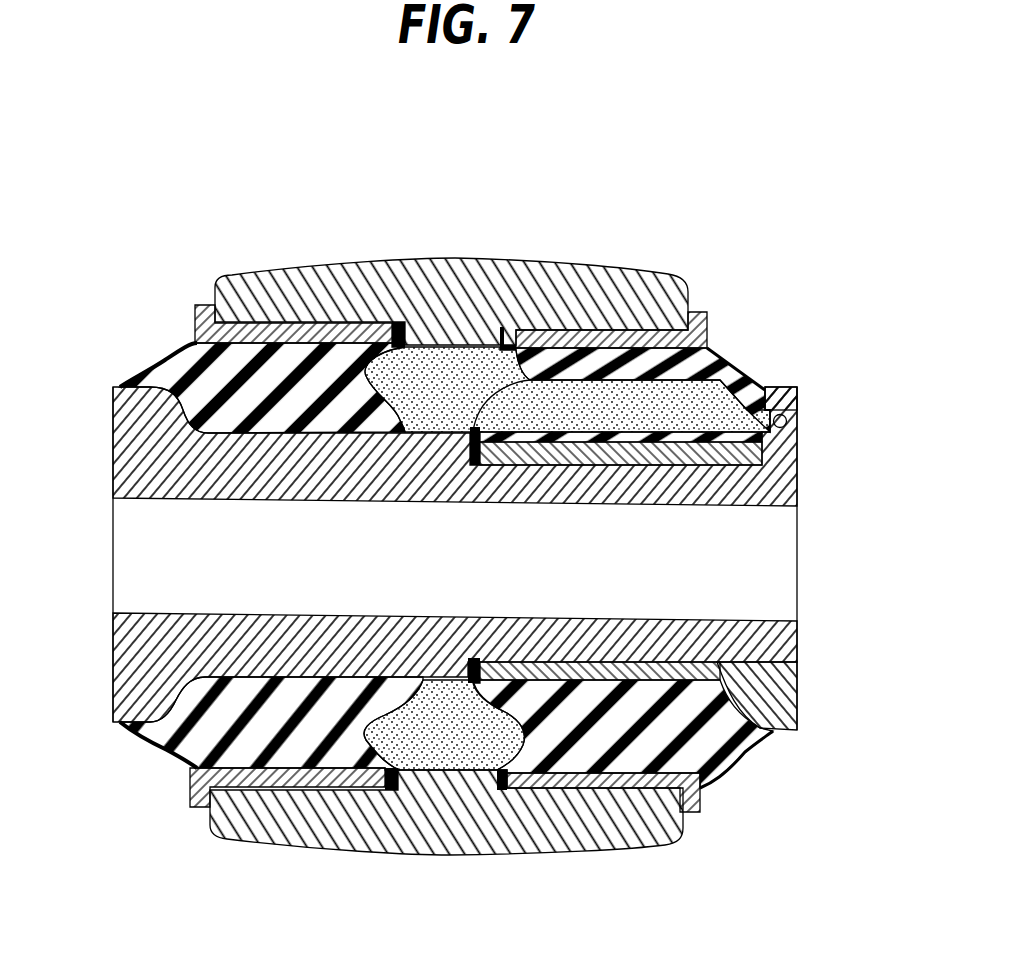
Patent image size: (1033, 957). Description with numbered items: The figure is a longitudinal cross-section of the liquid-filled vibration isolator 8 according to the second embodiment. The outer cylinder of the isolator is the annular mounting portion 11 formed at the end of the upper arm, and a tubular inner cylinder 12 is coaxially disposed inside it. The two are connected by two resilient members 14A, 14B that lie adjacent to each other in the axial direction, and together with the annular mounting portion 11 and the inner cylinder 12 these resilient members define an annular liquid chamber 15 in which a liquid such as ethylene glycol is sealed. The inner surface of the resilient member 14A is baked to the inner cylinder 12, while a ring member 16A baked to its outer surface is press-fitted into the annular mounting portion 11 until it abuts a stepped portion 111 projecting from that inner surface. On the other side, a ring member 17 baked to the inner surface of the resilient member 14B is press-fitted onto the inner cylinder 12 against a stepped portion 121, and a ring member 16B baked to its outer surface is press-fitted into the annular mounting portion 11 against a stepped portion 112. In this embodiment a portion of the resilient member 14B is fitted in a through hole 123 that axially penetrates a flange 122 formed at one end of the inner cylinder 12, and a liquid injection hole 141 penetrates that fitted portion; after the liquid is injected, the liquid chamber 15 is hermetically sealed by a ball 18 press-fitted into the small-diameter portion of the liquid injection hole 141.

The liquid-filled vibration isolator 8 is at (303, 252).
The annular mounting portion 11 is at (594, 262).
The stepped portion 111 is at (396, 322).
The stepped portion 112 is at (527, 328).
The inner cylinder 12 is at (216, 504).
The stepped portion 121 is at (487, 658).
The flange 122 is at (797, 674).
The through hole 123 is at (805, 397).
The resilient member 14A is at (147, 373).
The resilient member 14B is at (728, 377).
The liquid injection hole 141 is at (756, 422).
The liquid chamber 15 is at (470, 408).
The ring member 16A is at (332, 330).
The ring member 16B is at (637, 340).
The ring member 17 is at (595, 447).
The ball 18 is at (797, 424).